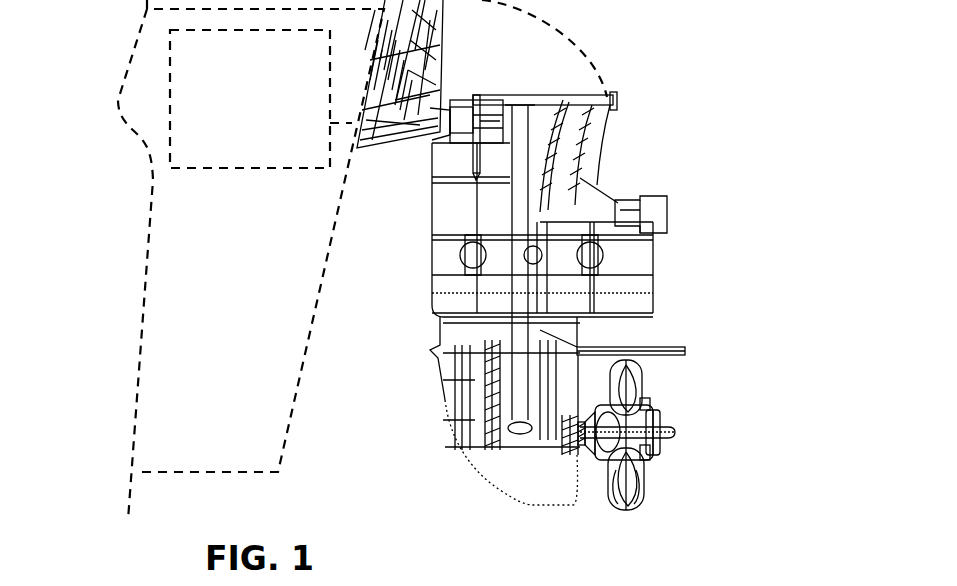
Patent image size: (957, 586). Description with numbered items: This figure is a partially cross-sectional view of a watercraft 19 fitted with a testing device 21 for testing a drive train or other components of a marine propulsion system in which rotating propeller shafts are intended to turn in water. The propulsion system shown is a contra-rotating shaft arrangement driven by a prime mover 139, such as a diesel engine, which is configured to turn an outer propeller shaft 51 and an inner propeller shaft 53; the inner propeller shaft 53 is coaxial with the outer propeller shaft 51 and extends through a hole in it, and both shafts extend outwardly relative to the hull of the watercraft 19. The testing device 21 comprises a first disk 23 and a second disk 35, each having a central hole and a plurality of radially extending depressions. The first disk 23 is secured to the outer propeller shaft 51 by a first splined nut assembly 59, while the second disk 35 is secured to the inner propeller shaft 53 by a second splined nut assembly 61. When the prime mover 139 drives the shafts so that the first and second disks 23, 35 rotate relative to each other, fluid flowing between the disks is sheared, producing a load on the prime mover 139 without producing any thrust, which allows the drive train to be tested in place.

The watercraft 19 is at (156, 390).
The prime mover 139 is at (234, 147).
The testing device 21 is at (632, 520).
The first disk 23 is at (606, 504).
The second disk 35 is at (648, 493).
The outer propeller shaft 51 is at (585, 452).
The inner propeller shaft 53 is at (676, 420).
The first splined nut assembly 59 is at (586, 418).
The second splined nut assembly 61 is at (658, 418).